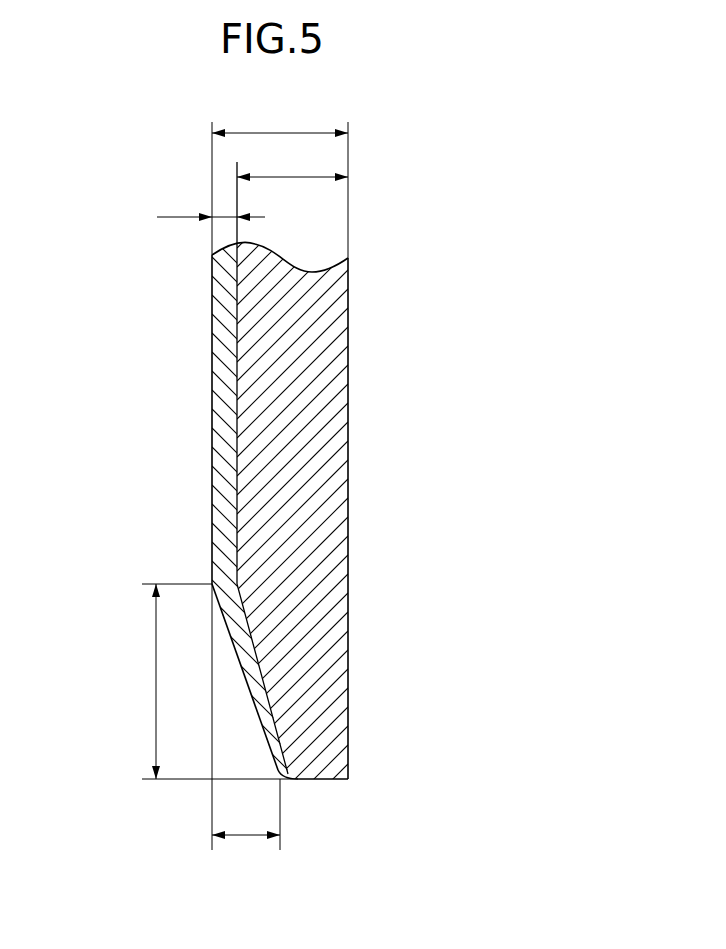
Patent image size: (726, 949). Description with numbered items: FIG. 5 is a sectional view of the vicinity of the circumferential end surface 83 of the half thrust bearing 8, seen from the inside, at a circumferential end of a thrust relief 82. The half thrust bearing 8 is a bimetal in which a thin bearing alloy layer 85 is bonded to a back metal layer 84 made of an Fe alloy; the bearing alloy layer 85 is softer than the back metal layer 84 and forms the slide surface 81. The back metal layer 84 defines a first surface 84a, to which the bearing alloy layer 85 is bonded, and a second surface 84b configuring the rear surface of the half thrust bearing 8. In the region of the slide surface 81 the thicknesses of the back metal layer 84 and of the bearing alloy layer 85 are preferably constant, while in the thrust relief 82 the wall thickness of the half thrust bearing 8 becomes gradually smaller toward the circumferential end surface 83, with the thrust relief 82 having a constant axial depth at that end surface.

The half thrust bearing 8 is at (414, 117).
The slide surface 81 is at (212, 532).
The thrust relief 82 is at (255, 712).
The circumferential end surface 83 is at (326, 779).
The back metal layer 84 is at (337, 368).
The first surface 84a is at (237, 437).
The second surface 84b is at (348, 428).
The bearing alloy layer 85 is at (218, 308).